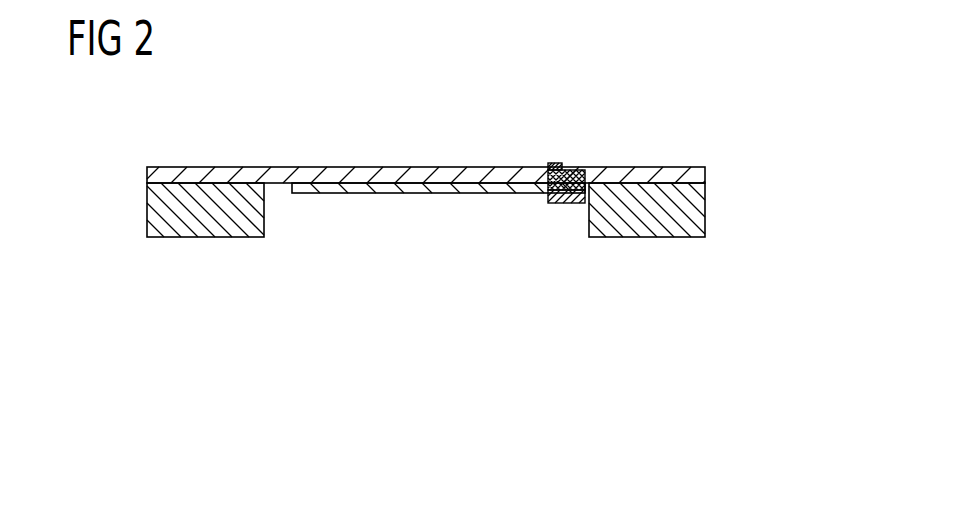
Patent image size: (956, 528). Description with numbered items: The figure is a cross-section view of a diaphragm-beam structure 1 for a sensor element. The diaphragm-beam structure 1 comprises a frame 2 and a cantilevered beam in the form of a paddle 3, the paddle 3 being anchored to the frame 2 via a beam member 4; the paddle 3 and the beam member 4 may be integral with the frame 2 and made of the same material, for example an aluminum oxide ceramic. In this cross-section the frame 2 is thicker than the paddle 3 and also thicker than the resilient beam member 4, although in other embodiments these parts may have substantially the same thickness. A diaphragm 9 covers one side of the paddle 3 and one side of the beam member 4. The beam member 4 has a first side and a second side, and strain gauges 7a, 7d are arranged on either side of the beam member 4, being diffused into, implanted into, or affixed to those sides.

The diaphragm-beam structure 1 is at (664, 116).
The frame 2 is at (692, 205).
The paddle 3 is at (403, 193).
The beam member 4 is at (553, 163).
The strain gauge 7a is at (575, 168).
The strain gauge 7d is at (568, 203).
The diaphragm 9 is at (342, 172).